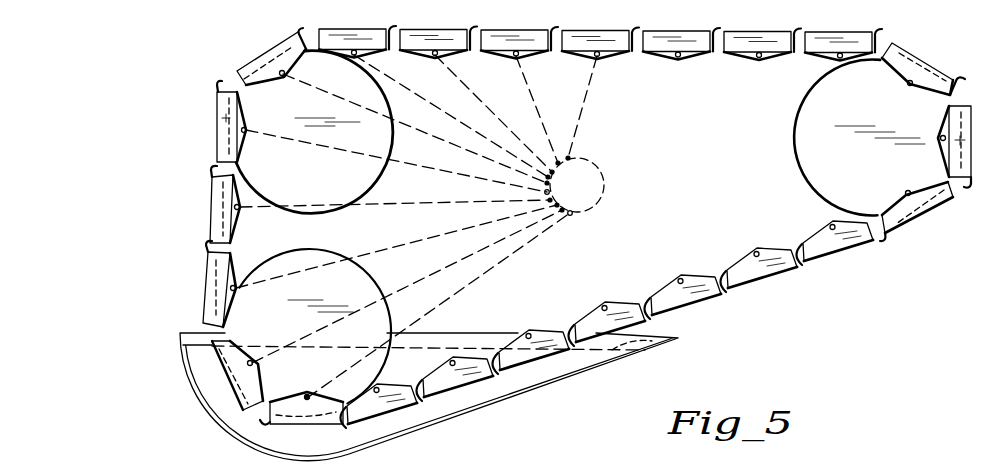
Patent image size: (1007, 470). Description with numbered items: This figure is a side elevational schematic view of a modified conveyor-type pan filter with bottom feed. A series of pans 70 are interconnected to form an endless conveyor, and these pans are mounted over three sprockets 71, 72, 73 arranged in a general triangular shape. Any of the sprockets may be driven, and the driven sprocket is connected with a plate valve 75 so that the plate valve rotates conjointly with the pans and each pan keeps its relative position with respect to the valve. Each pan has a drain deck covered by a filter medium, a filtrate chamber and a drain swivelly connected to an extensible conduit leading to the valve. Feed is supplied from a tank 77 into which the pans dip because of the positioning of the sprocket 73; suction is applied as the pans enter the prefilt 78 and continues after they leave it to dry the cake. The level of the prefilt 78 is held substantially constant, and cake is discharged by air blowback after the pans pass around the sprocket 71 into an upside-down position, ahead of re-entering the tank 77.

The pans 70 is at (675, 33).
The sprocket 71 is at (797, 121).
The sprocket 72 is at (380, 145).
The sprocket 73 is at (355, 288).
The plate valve 75 is at (605, 172).
The tank 77 is at (557, 380).
The prefilt 78 is at (652, 343).